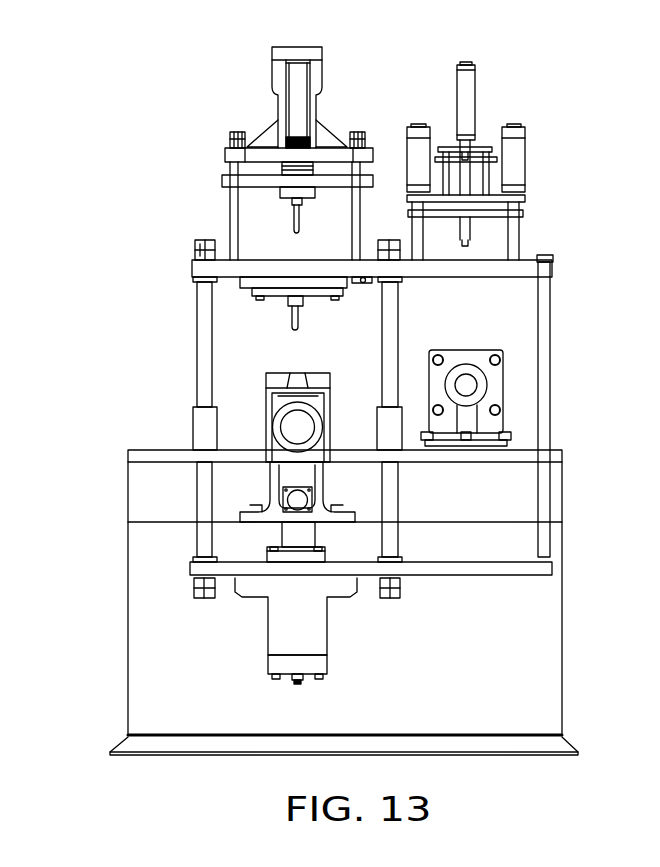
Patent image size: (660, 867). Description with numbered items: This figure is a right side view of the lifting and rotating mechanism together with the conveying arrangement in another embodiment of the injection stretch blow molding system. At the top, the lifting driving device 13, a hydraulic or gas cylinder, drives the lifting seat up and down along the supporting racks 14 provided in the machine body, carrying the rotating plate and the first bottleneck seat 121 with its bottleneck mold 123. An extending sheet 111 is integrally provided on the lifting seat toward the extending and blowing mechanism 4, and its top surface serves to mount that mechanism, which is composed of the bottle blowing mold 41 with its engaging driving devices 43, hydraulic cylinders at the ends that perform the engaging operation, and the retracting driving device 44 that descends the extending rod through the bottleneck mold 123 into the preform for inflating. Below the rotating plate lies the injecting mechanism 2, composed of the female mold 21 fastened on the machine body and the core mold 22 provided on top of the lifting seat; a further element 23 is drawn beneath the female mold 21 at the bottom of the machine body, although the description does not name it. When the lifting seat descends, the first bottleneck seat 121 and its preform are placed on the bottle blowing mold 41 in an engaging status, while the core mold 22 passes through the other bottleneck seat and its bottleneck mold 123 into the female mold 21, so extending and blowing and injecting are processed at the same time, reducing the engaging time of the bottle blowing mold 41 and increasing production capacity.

The lifting driving device 13 is at (295, 97).
The extending and blowing mechanism 4 is at (494, 111).
The retracting driving device 44 is at (520, 148).
The bottleneck mold 123 is at (296, 218).
The extending sheet 111 is at (517, 271).
The first bottleneck seat 121 is at (287, 298).
The core mold 22 is at (294, 320).
The supporting rack 14 is at (205, 358).
The female mold 21 is at (272, 389).
The injecting mechanism 2 is at (262, 421).
The bottle blowing mold 41 is at (492, 381).
The engaging driving device 43 is at (473, 400).
The motor 23 is at (305, 633).